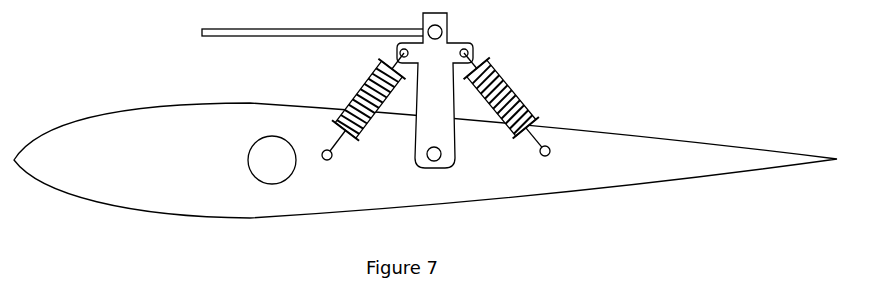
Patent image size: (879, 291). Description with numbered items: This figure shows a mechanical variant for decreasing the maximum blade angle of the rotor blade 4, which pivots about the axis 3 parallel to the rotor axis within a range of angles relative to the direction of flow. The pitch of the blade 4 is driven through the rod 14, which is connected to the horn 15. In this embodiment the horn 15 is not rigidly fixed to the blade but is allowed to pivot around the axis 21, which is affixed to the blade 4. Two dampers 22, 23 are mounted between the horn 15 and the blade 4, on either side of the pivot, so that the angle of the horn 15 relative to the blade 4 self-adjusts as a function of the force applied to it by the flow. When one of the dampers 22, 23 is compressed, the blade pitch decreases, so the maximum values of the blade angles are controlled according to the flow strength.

The axis 3 is at (255, 178).
The blade 4 is at (148, 127).
The rod 14 is at (273, 38).
The horn 15 is at (448, 26).
The axis 21 is at (440, 160).
The damper 22 is at (515, 92).
The damper 23 is at (360, 98).